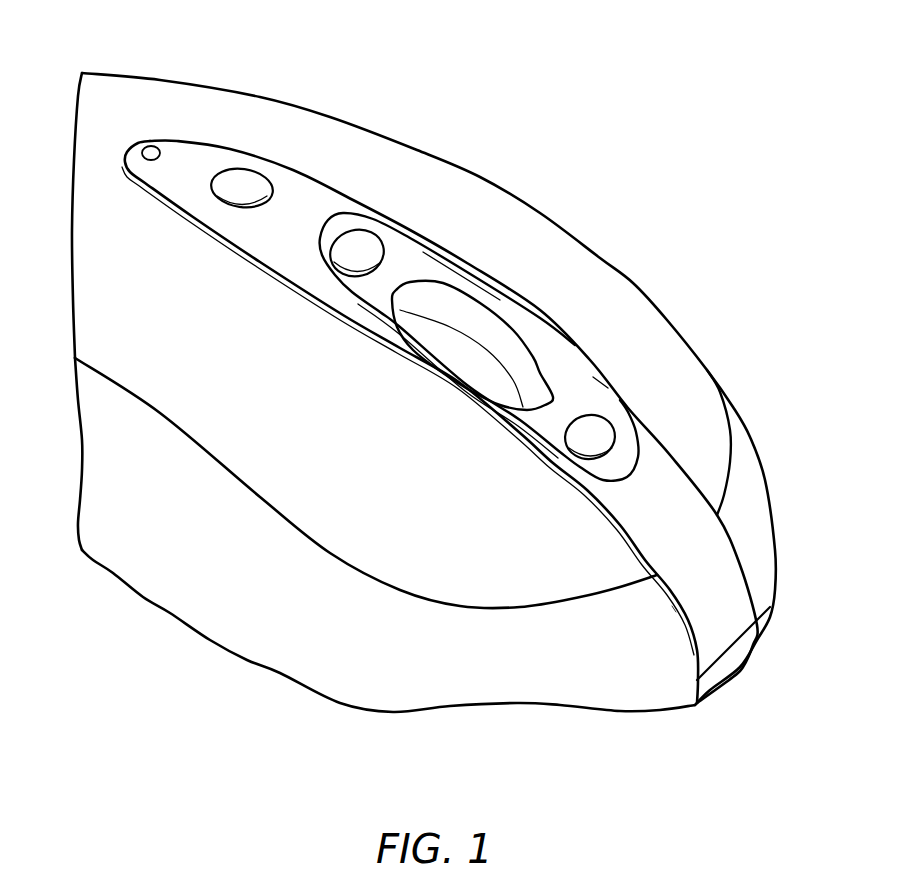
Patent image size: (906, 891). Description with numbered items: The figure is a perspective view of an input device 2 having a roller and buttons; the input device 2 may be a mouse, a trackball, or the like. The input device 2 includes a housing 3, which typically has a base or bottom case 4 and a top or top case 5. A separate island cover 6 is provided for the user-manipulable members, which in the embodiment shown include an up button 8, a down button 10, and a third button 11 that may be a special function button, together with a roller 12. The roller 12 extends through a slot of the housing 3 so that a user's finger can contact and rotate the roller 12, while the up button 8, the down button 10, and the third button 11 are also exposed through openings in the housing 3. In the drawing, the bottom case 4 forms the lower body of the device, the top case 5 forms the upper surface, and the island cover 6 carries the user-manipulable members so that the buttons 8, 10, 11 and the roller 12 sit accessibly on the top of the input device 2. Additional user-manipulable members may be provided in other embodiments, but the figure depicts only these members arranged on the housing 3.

The input device 2 is at (743, 188).
The housing 3 is at (482, 167).
The bottom case 4 is at (180, 530).
The top case 5 is at (570, 260).
The island cover 6 is at (703, 557).
The up button 8 is at (363, 250).
The down button 10 is at (597, 433).
The third button 11 is at (245, 186).
The roller 12 is at (493, 335).